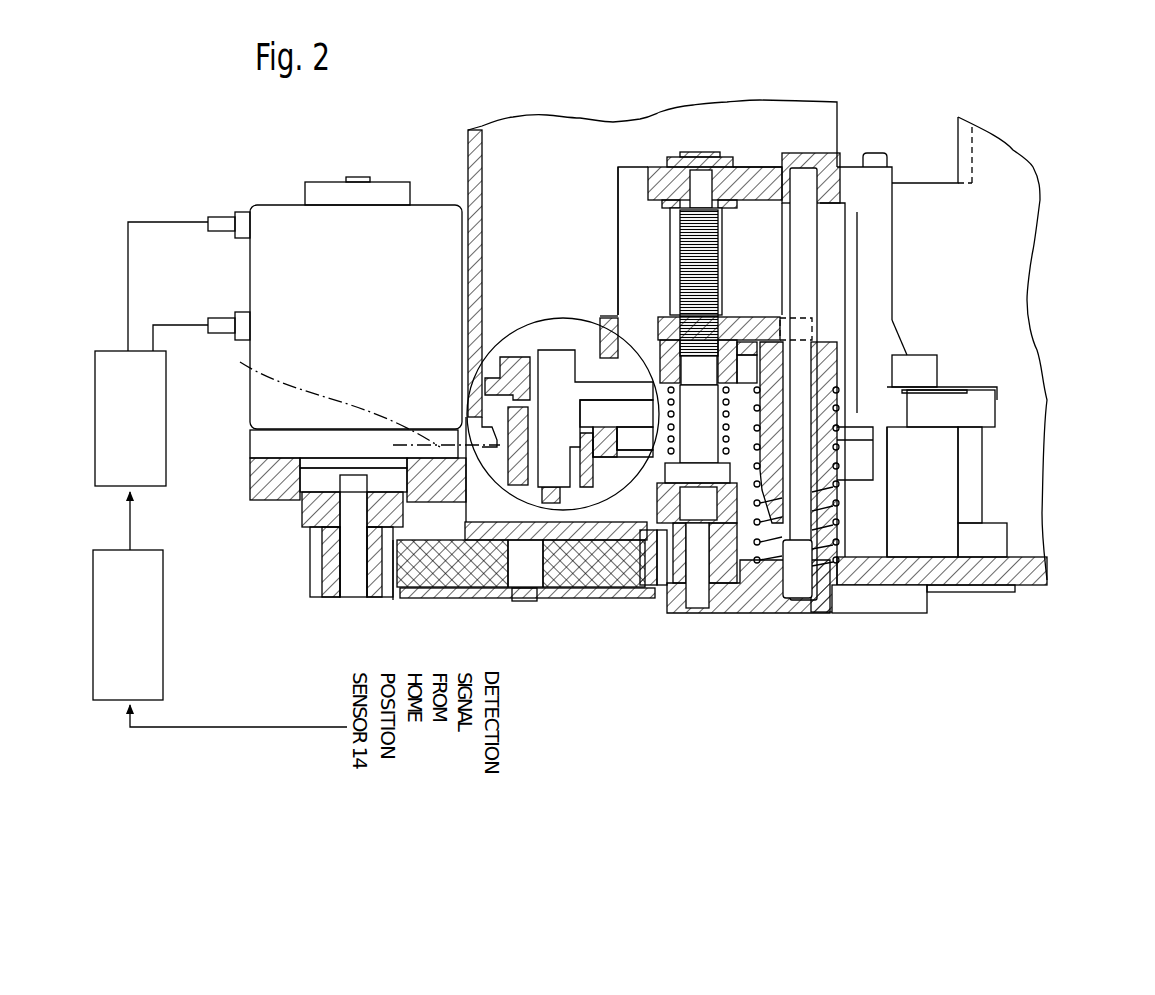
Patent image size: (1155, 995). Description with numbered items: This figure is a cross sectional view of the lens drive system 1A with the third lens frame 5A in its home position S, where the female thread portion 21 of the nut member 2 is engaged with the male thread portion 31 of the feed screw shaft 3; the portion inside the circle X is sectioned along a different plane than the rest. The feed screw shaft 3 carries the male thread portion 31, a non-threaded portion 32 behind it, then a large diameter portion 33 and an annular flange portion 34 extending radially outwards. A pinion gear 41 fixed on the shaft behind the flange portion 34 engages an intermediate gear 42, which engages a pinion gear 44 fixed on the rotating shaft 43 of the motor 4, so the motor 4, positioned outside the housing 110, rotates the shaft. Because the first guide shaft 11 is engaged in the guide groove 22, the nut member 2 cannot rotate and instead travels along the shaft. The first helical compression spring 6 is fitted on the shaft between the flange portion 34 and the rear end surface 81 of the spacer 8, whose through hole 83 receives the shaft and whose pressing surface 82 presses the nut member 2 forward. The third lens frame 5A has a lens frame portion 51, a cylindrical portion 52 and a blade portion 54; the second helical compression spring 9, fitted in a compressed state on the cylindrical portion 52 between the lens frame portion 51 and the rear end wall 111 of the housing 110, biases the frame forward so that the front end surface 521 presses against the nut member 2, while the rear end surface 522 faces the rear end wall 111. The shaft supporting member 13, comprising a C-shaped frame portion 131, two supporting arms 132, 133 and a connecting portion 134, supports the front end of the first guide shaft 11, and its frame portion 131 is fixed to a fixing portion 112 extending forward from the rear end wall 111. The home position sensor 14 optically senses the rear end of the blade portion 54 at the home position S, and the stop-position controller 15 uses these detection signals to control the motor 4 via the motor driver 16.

The lens drive system 1A is at (937, 238).
The nut member 2 is at (757, 317).
The feed screw shaft 3 is at (730, 237).
The motor 4 is at (290, 240).
The third lens frame 5A is at (927, 350).
The first helical compression spring 6 is at (613, 370).
The spacer 8 is at (655, 330).
The second helical compression spring 9 is at (748, 585).
The first guide shaft 11 is at (803, 230).
The shaft supporting member 13 is at (655, 158).
The home position sensor 14 is at (455, 590).
The stop-position controller (CPU) 15 is at (220, 609).
The motor driver 16 is at (151, 354).
The female thread portion 21 is at (668, 320).
The guide groove 22 is at (812, 323).
The male thread portion 31 is at (682, 320).
The non-threaded portion 32 is at (657, 347).
The large diameter portion 33 is at (647, 590).
The annular flange portion 34 is at (700, 470).
The pinion gear 41 is at (667, 600).
The intermediate gear 42 is at (405, 595).
The rotating shaft 43 is at (352, 583).
The pinion gear (drive gear) 44 is at (322, 566).
The lens frame portion 51 is at (915, 372).
The cylindrical portion 52 is at (848, 547).
The blade portion 54 is at (537, 412).
The rear end surface 81 is at (603, 325).
The pressing surface 82 is at (727, 318).
The through hole 83 is at (800, 305).
The housing 110 is at (466, 140).
The rear end wall 111 is at (897, 570).
The fixing portion 112 is at (935, 478).
The frame portion 131 is at (508, 345).
The supporting arm 132 is at (635, 230).
The supporting arm 133 is at (875, 237).
The connecting portion 134 is at (730, 152).
The front end surface 521 is at (813, 340).
The rear end surface 522 is at (775, 595).
The home position S is at (361, 396).
The circle X is at (530, 327).